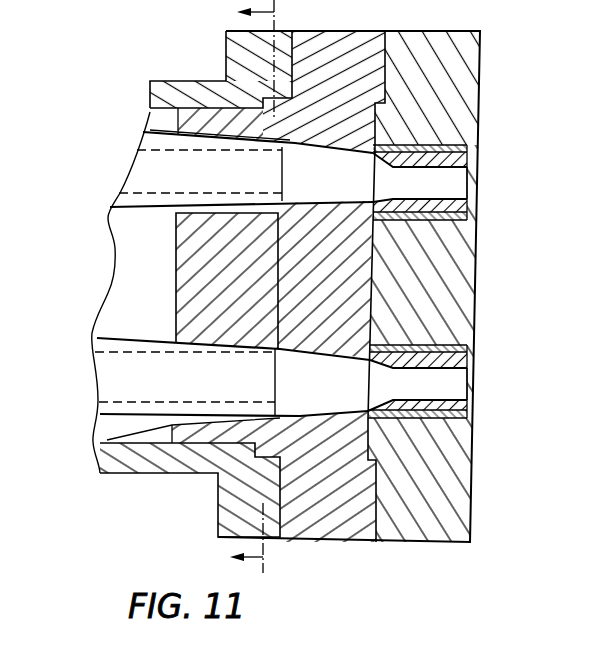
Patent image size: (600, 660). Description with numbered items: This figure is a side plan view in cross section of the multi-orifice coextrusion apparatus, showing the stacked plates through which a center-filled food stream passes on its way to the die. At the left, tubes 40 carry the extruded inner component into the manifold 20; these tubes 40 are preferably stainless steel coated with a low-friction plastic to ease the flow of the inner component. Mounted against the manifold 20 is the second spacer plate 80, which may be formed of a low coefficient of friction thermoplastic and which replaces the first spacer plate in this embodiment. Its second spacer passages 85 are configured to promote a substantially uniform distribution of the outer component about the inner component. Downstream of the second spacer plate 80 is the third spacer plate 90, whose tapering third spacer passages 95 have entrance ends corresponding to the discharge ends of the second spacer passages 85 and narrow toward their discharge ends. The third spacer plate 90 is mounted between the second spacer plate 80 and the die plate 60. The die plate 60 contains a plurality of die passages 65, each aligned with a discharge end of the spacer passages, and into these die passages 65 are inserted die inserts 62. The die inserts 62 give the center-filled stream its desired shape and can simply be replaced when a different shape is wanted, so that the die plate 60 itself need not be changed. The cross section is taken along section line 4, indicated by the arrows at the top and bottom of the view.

The manifold 20 is at (198, 81).
The tubes 40 is at (108, 221).
The die plate 60 is at (480, 103).
The die inserts 62 is at (481, 157).
The die passages 65 is at (444, 192).
The second spacer plate 80 is at (174, 288).
The second spacer passages 85 is at (168, 216).
The third spacer plate 90 is at (344, 32).
The third spacer passages 95 is at (331, 183).
The section line 4- 4 is at (272, 286).